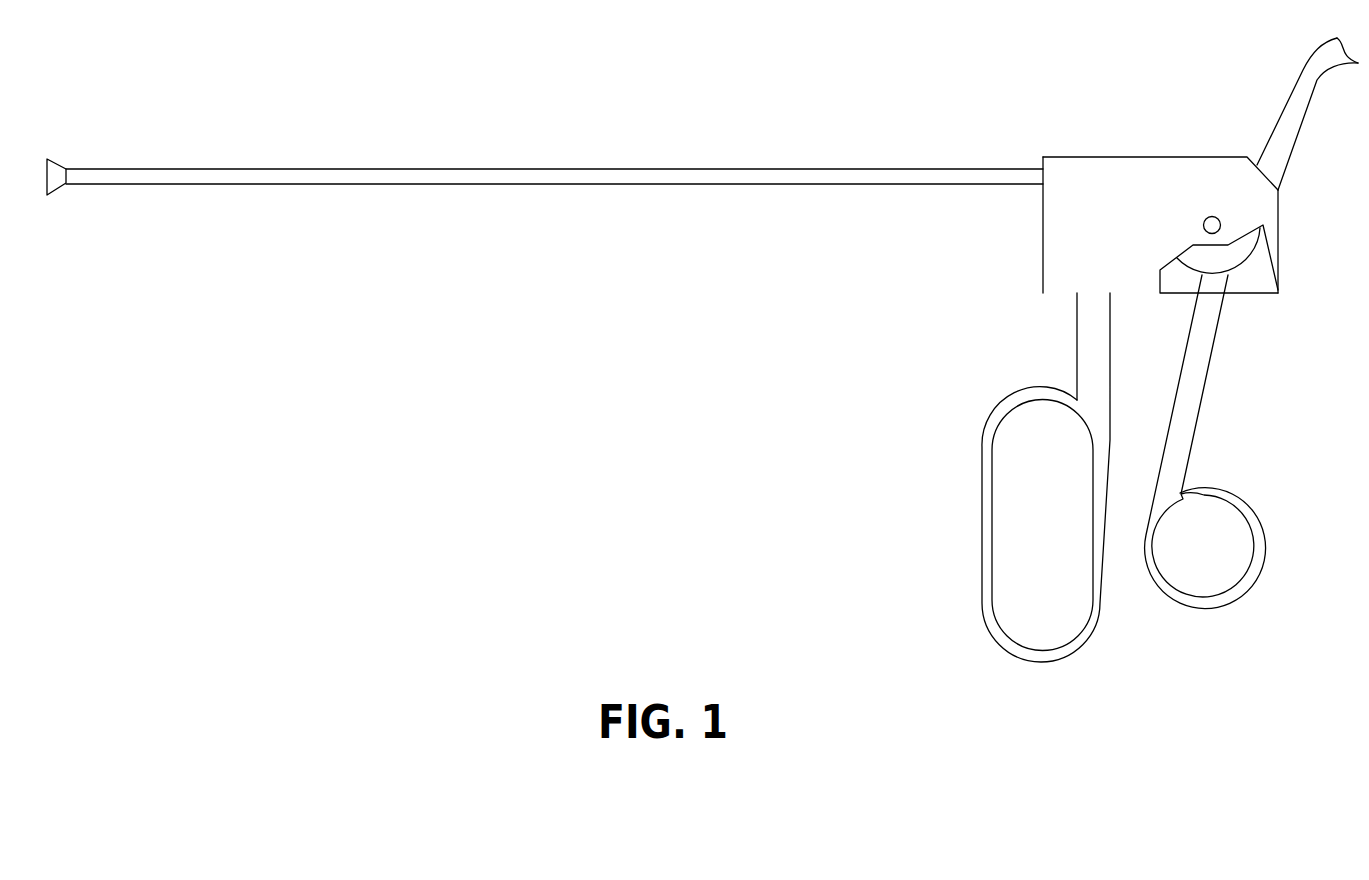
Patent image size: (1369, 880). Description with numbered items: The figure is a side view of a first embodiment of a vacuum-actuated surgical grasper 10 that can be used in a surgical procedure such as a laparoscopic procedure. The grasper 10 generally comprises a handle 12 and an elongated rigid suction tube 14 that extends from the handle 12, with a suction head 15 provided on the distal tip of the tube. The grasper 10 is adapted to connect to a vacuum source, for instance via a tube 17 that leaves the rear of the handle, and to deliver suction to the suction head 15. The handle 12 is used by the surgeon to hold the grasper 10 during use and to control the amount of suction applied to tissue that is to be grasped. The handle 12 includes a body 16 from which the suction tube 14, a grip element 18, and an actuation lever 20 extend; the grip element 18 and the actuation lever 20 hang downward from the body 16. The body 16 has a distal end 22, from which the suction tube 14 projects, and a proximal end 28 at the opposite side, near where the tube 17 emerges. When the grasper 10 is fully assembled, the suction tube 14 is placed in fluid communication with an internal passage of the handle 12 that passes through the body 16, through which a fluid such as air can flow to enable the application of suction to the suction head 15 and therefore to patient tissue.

The vacuum-actuated surgical grasper 10 is at (765, 69).
The handle 12 is at (1206, 131).
The elongated rigid suction tube 14 is at (570, 169).
The suction head 15 is at (57, 172).
The body 16 is at (1125, 157).
The tube 17 is at (1303, 83).
The grip element 18 is at (947, 555).
The actuation lever 20 is at (1238, 398).
The distal end 22 is at (1004, 240).
The proximal end 28 is at (1318, 212).